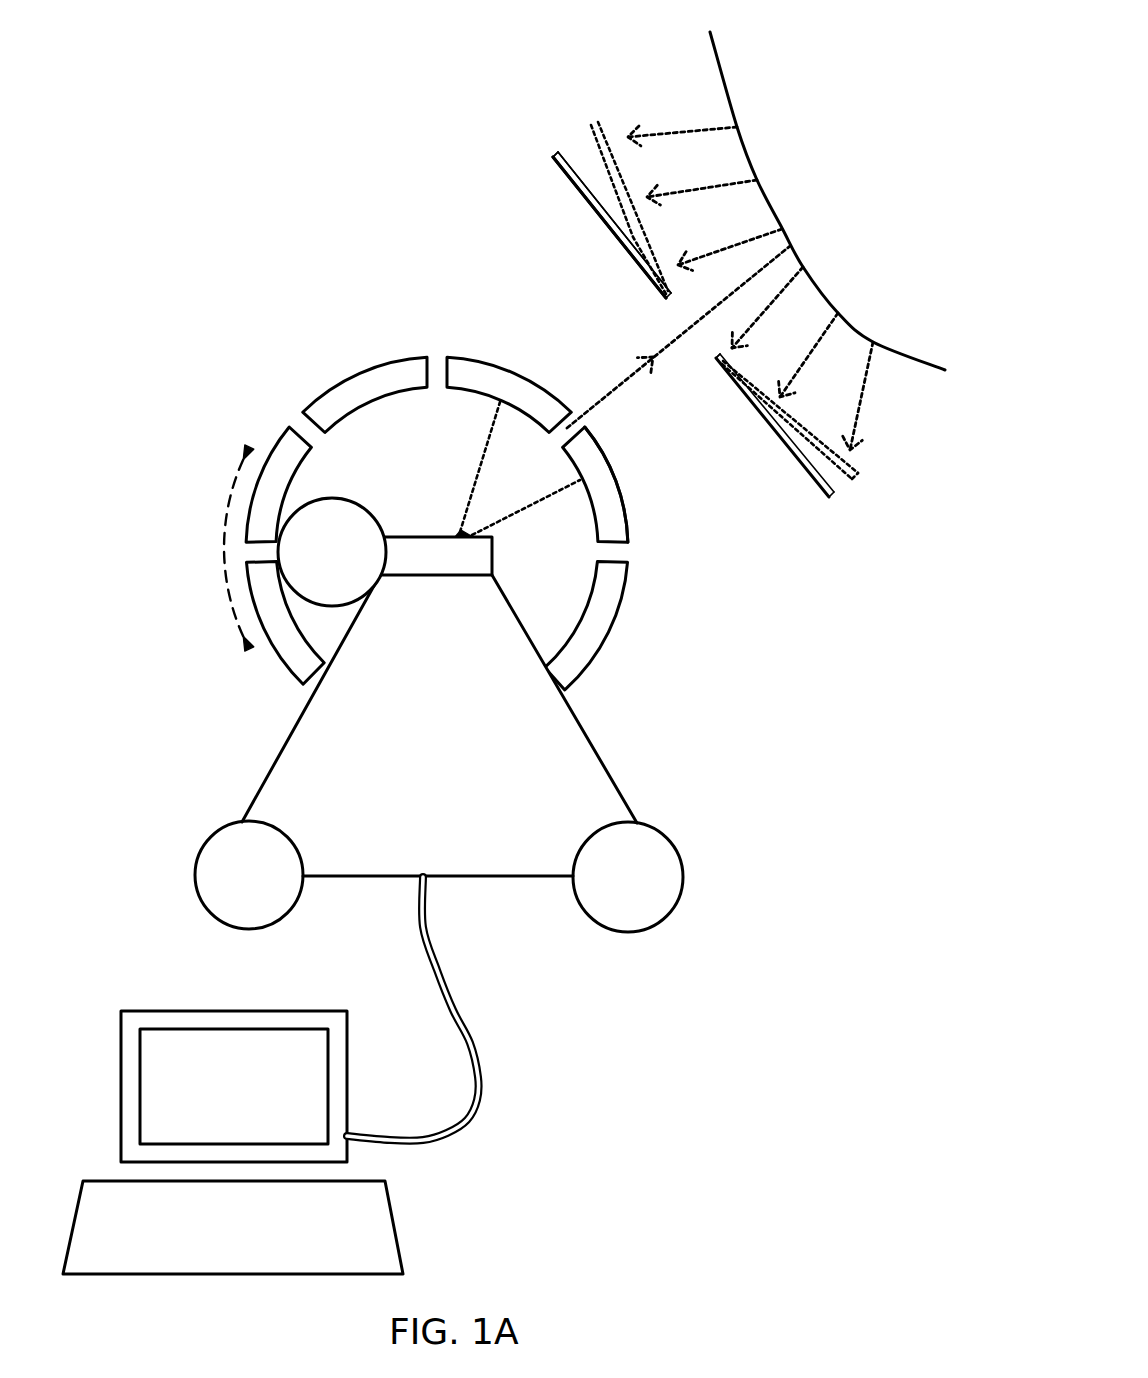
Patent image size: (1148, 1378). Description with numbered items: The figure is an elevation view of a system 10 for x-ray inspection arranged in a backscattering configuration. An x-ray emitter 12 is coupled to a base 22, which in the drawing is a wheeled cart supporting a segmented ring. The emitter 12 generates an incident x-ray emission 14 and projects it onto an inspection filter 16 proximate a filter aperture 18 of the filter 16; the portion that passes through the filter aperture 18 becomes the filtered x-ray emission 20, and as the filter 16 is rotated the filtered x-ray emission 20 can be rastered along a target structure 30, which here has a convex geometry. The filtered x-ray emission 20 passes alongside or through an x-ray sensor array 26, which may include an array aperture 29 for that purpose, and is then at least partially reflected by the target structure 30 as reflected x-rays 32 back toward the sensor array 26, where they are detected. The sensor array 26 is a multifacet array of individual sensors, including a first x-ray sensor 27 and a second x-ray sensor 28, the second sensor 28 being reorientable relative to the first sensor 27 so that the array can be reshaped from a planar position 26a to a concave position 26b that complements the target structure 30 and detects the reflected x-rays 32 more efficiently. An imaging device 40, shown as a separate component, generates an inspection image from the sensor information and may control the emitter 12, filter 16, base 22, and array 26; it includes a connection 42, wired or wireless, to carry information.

The system for x-ray inspection 10 is at (146, 62).
The x-ray emitter 12 is at (456, 532).
The incident x-ray emission 14 is at (500, 402).
The inspection filter 16 is at (348, 375).
The filter aperture 18 is at (590, 432).
The filtered x-ray emission 20 is at (618, 390).
The base 22 is at (585, 735).
The x-ray sensor array 26 is at (571, 150).
The planar position 26a is at (538, 165).
The concave position 26b is at (595, 121).
The first x-ray sensor 27 is at (572, 188).
The second x-ray sensor 28 is at (580, 197).
The array aperture 29 is at (699, 376).
The target structure 30 is at (717, 58).
The reflected x-rays 32 is at (867, 382).
The imaging device 40 is at (138, 1008).
The connection 42 is at (472, 1033).